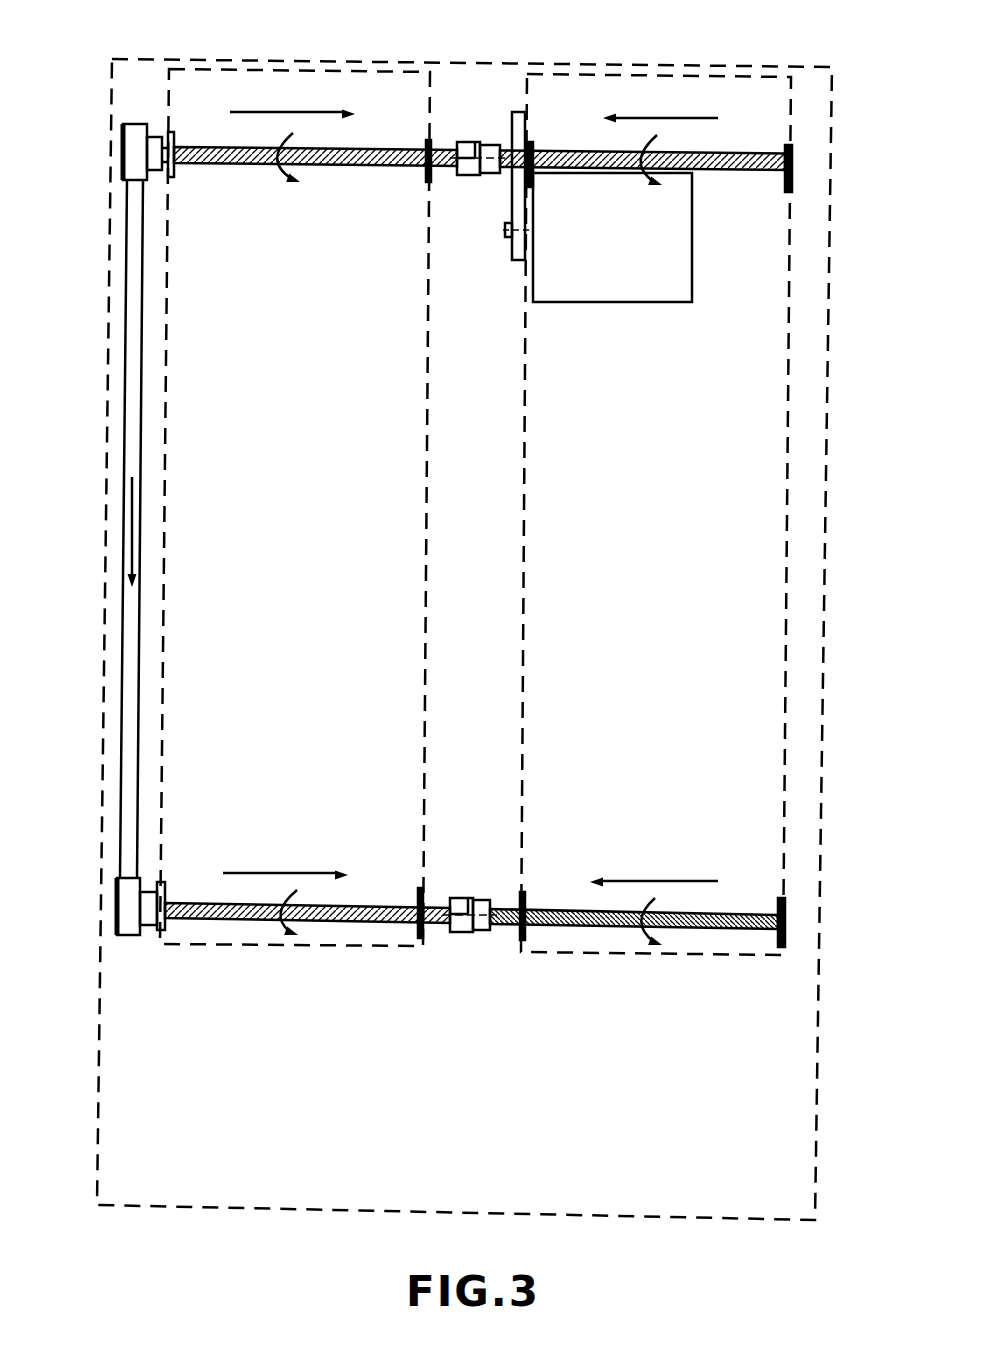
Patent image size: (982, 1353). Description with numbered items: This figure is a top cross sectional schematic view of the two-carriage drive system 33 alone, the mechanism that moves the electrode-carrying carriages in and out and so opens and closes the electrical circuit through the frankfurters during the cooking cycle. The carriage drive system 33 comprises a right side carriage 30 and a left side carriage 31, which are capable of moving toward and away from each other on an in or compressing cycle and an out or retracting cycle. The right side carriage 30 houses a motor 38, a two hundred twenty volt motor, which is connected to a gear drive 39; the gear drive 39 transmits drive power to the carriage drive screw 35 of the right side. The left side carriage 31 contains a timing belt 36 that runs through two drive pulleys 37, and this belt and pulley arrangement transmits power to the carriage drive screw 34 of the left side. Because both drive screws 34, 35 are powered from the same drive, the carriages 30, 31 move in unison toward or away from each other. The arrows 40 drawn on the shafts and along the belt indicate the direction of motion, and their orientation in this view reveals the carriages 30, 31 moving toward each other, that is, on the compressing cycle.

The right side carriage 30 is at (624, 953).
The left side carriage 31 is at (301, 946).
The carriage drive system 33 is at (820, 1002).
The carriage drive screw 34 is at (382, 905).
The carriage drive screw 35 is at (363, 148).
The timing belt 36 is at (125, 459).
The drive pulleys 37 is at (123, 154).
The motor 38 is at (663, 302).
The gear drive 39 is at (520, 260).
The arrows 40 is at (323, 112).